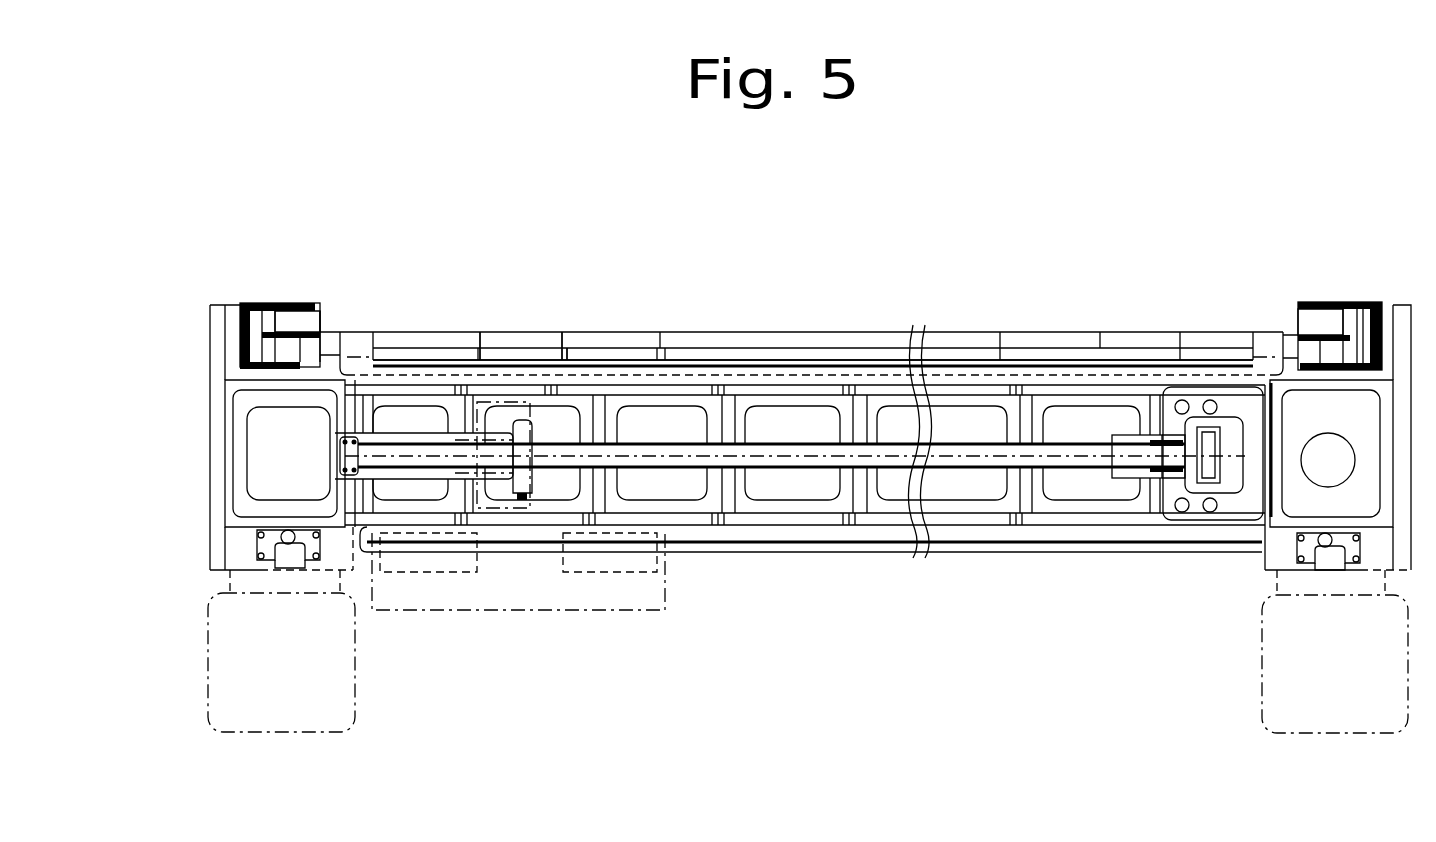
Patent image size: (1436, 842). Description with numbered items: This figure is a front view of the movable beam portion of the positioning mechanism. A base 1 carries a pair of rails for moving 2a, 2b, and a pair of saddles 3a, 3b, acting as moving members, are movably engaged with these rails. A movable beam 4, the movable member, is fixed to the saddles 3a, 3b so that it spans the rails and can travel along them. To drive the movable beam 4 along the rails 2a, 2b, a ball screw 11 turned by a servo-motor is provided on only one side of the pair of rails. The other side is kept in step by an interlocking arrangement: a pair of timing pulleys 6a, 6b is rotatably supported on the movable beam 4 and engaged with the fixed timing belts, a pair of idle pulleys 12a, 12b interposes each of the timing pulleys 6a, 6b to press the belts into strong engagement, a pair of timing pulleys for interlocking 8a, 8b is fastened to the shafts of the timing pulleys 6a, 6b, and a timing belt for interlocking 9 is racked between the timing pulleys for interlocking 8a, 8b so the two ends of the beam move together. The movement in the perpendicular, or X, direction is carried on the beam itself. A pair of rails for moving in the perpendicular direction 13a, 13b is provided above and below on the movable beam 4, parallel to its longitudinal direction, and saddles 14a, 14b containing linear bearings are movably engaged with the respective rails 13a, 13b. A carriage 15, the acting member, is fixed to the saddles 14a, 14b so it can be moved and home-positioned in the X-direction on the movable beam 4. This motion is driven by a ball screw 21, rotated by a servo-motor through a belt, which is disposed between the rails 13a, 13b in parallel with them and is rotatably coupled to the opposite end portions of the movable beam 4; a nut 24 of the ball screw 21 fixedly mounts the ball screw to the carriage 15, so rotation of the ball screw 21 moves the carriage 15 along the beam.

The base 1 is at (285, 712).
The rail for moving 2a is at (1328, 563).
The rail for moving 2b is at (287, 562).
The saddle 3a is at (1297, 548).
The saddle 3b is at (267, 548).
The movable beam 4 is at (988, 403).
The timing pulley 6a is at (1313, 302).
The timing pulley 6b is at (303, 303).
The timing pulley for interlocking 8a is at (1313, 348).
The timing pulley for interlocking 8b is at (320, 340).
The timing belt for interlocking 9 is at (1074, 340).
The ball screw 11 is at (1262, 547).
The idle pulley 12a is at (1320, 322).
The idle pulley 12b is at (297, 321).
The rail for moving in the perpendicular direction 13a is at (742, 368).
The rail for moving in the perpendicular direction 13b is at (738, 544).
The saddle 14a is at (580, 352).
The saddle 14b is at (580, 553).
The carriage 15 is at (605, 590).
The ball screw 21 is at (684, 453).
The nut 24 is at (472, 462).